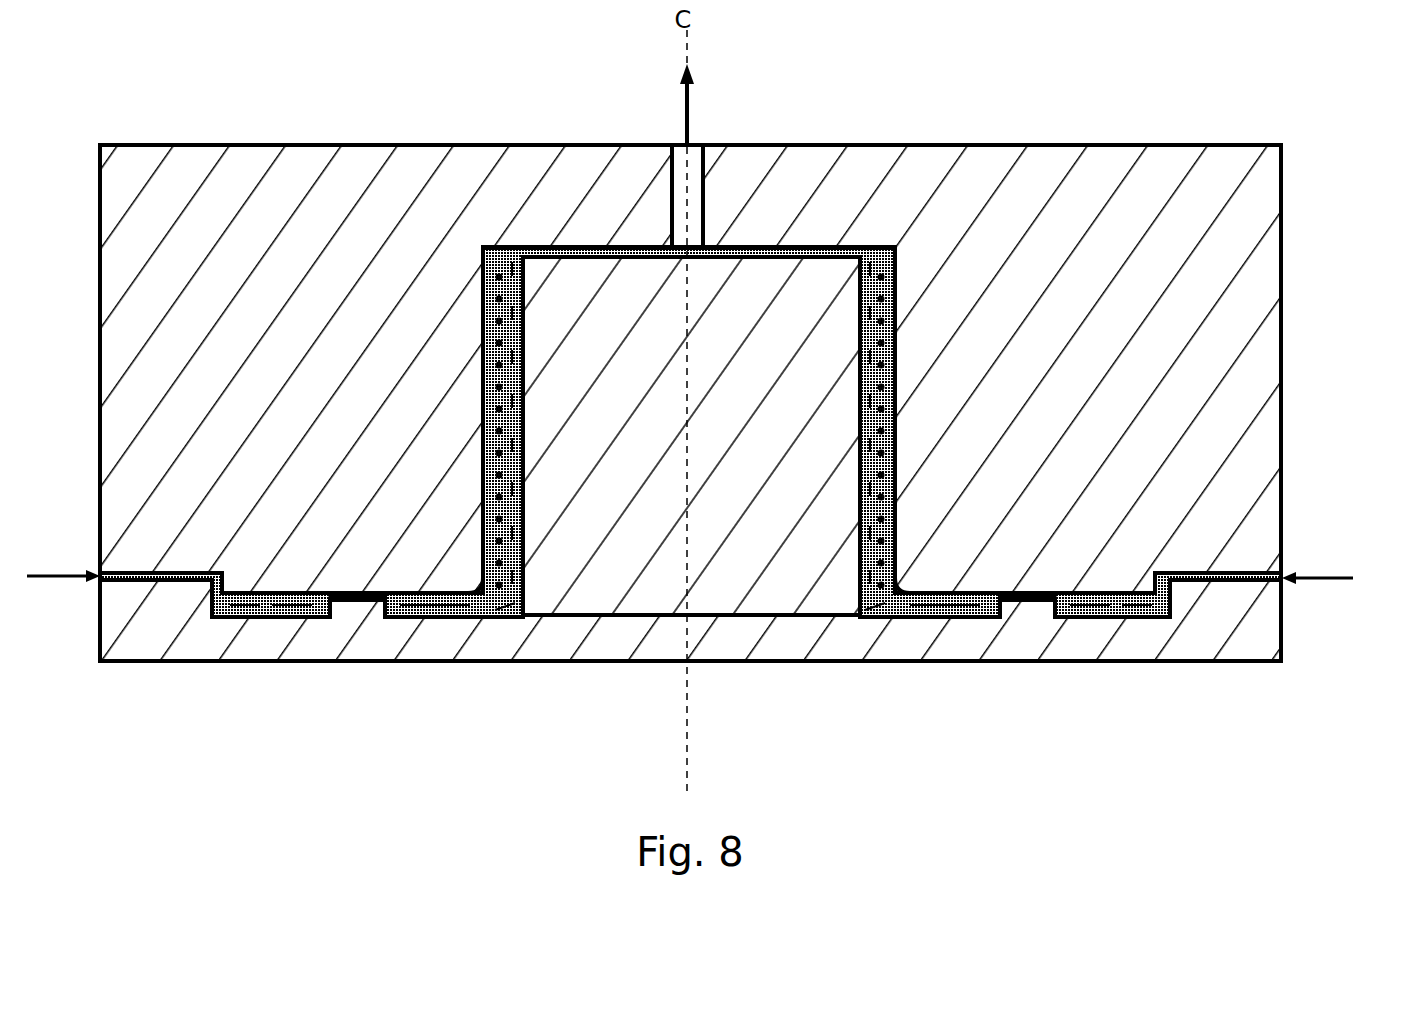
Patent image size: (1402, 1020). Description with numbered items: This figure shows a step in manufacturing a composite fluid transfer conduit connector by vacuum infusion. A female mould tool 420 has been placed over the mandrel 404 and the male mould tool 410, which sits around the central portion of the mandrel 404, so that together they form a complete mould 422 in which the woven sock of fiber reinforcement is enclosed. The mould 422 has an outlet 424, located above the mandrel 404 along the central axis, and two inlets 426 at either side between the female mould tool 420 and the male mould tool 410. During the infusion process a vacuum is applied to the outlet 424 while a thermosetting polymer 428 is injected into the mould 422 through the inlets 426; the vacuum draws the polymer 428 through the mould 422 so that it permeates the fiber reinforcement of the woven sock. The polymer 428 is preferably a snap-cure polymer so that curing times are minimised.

The mandrel 404 is at (724, 583).
The male mould tool 410 is at (893, 642).
The female mould tool 420 is at (985, 172).
The mould 422 is at (534, 704).
The outlet 424 is at (697, 152).
The inlets 426 is at (100, 578).
The thermosetting polymer 428 is at (207, 608).